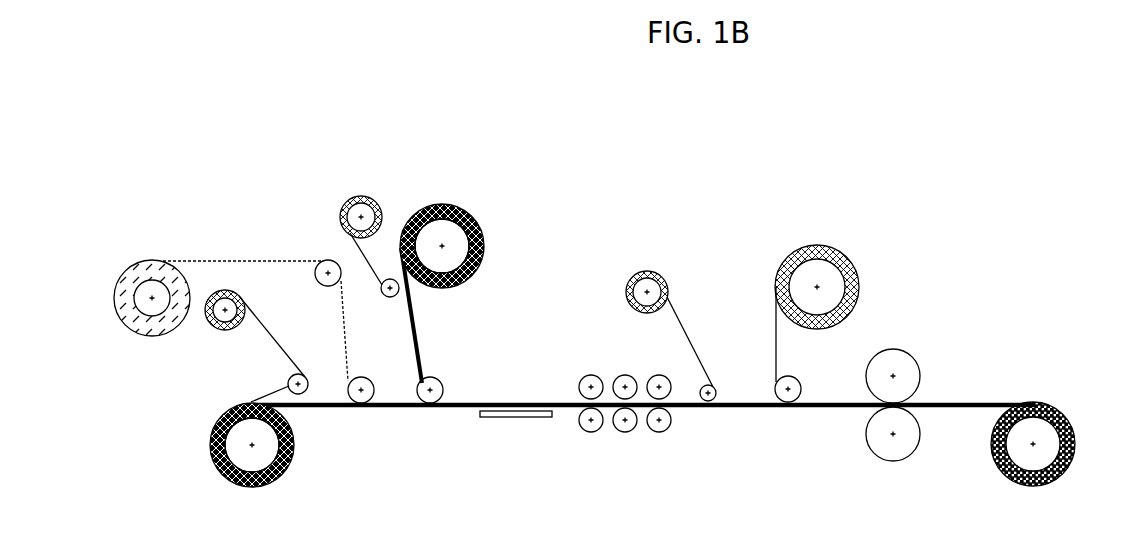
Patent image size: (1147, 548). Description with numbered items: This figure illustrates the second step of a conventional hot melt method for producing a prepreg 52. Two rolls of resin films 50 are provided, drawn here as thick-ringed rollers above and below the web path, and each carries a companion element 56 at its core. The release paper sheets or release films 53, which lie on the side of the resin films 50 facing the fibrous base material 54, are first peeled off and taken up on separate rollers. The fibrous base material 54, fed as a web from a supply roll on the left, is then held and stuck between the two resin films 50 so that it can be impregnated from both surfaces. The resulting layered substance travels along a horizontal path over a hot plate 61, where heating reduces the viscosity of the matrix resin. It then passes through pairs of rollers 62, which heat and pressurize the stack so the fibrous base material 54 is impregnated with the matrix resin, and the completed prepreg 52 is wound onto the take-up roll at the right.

The resin film 50 is at (430, 203).
The prepreg 52 is at (1053, 407).
The release paper sheet or release film 53 is at (348, 242).
The fibrous base material 54 is at (235, 260).
The roller core 56 is at (457, 242).
The hot plate 61 is at (517, 418).
The rollers 62 is at (650, 430).